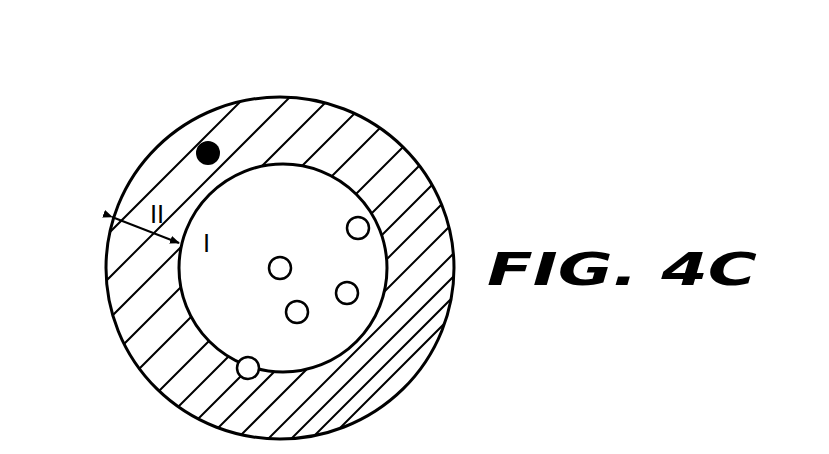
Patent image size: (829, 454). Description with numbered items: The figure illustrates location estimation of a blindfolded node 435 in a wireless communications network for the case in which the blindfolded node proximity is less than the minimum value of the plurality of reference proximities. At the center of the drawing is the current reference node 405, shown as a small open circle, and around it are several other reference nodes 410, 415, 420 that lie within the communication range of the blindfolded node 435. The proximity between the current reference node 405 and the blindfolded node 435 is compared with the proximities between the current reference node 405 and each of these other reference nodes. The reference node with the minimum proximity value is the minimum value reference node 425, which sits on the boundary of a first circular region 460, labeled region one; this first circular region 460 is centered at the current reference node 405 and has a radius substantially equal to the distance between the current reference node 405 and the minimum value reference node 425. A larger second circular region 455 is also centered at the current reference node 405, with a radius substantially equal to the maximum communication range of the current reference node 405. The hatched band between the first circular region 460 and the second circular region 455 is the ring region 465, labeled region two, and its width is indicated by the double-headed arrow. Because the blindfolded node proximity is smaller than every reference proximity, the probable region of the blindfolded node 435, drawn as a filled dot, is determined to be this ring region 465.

The current reference node 405 is at (269, 264).
The opening 410 is at (298, 323).
The opening 415 is at (350, 220).
The opening 420 is at (339, 286).
The minimum value reference node 425 is at (239, 360).
The blindfolded node 435 is at (200, 146).
The second circular region 455 is at (272, 97).
The first circular region 460 is at (322, 168).
The ring region 465 is at (137, 232).